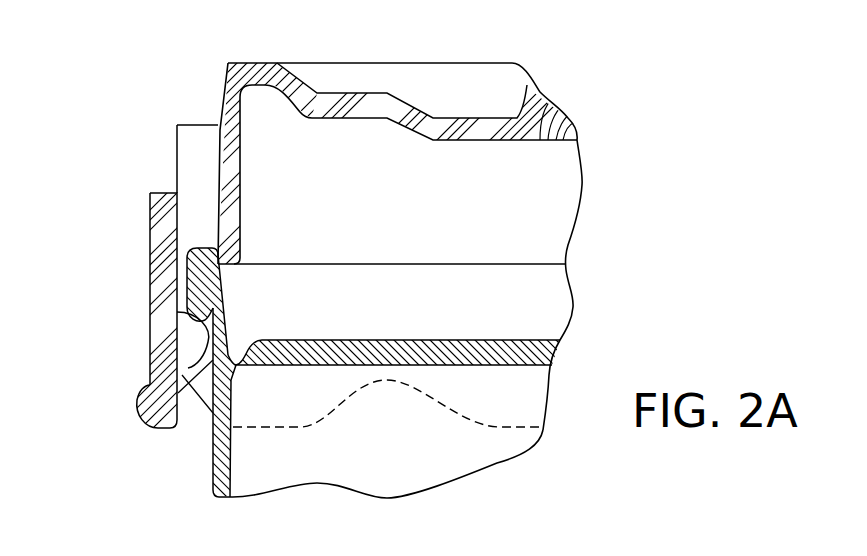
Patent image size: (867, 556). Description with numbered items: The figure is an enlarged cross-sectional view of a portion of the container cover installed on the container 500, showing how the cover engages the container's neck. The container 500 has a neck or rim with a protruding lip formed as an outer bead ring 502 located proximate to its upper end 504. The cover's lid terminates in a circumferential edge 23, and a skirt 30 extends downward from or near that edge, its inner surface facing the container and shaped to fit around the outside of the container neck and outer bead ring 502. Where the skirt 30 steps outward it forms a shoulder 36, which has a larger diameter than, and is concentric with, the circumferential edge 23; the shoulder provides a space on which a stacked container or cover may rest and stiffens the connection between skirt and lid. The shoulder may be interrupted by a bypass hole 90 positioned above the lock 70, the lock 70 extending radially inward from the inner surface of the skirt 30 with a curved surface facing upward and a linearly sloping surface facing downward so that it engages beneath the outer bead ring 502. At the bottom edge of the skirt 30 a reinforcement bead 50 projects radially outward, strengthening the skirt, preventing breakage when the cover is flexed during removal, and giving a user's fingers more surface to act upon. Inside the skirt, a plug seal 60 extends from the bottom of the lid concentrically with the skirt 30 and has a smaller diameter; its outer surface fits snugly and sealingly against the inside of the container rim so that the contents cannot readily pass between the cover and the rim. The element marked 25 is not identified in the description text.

The circumferential edge 23 is at (232, 63).
The plug seal 60 is at (233, 165).
The bypass hole 90 is at (195, 140).
The shoulder 36 is at (150, 193).
The reinforcement bead 50 is at (145, 405).
The skirt 30 is at (150, 362).
The lock 70 is at (192, 335).
The outer bead ring 502 is at (198, 278).
The container 500 is at (220, 468).
The upper end 504 is at (512, 350).
The base 25 is at (398, 550).